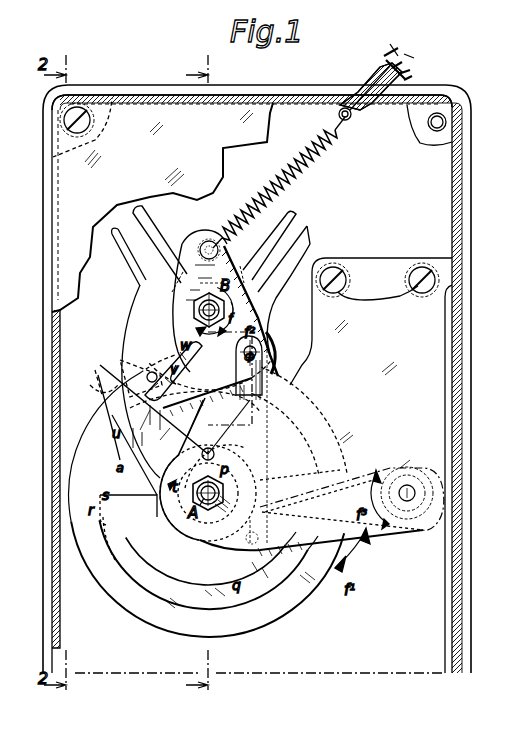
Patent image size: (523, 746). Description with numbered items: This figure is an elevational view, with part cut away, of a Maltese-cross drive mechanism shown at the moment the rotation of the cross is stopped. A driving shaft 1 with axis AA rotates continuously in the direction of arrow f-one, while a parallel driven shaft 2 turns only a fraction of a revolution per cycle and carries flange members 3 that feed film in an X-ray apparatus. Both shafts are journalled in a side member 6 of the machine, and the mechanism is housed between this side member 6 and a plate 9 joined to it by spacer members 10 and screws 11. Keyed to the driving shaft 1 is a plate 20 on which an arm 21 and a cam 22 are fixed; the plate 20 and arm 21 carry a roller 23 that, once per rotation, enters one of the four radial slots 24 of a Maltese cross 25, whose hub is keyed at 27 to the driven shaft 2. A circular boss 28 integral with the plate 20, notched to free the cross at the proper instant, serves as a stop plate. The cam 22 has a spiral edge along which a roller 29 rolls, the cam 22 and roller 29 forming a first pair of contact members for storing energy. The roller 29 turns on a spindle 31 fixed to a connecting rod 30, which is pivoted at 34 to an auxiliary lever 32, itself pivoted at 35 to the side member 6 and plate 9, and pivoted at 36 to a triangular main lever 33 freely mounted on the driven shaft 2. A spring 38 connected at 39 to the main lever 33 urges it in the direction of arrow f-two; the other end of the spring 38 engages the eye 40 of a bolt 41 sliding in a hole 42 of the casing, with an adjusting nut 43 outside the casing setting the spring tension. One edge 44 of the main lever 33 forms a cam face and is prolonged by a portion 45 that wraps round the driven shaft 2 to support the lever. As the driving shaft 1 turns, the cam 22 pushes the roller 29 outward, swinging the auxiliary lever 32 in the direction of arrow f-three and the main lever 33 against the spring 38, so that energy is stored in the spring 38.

The driving shaft 1 is at (224, 496).
The driven shaft 2 is at (205, 306).
The flange members 3 is at (187, 369).
The side member 6 is at (432, 617).
The plate 9 is at (372, 402).
The spacer members 10 is at (407, 273).
The screws 11 is at (378, 294).
The plate 20 is at (118, 590).
The arm 21 is at (135, 457).
The cam 22 is at (135, 543).
The roller 23 is at (100, 392).
The radial slots 24 is at (140, 372).
The Maltese cross 25 is at (130, 288).
The key 27 is at (274, 590).
The circular boss 28 is at (130, 483).
The roller 29 is at (208, 493).
The connecting rod 30 is at (240, 382).
The spindle 31 is at (190, 438).
The auxiliary lever 32 is at (400, 532).
The main lever 33 is at (262, 290).
The pivot 34 is at (235, 552).
The pivot 35 is at (404, 490).
The pivot 36 is at (268, 344).
The spring 38 is at (317, 169).
The spring connection 39 is at (207, 242).
The eye 40 is at (350, 117).
The bolt 41 is at (368, 82).
The hole 42 is at (368, 88).
The adjusting nut 43 is at (388, 52).
The edge 44 is at (182, 345).
The portion 45 is at (172, 326).